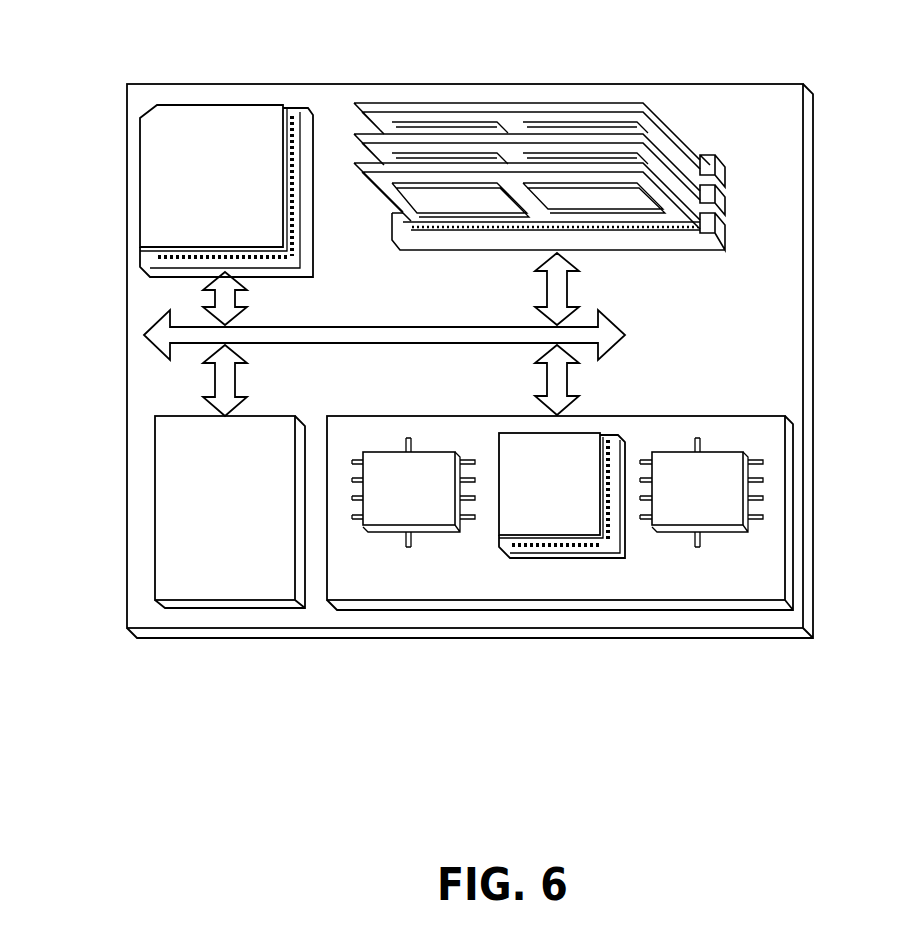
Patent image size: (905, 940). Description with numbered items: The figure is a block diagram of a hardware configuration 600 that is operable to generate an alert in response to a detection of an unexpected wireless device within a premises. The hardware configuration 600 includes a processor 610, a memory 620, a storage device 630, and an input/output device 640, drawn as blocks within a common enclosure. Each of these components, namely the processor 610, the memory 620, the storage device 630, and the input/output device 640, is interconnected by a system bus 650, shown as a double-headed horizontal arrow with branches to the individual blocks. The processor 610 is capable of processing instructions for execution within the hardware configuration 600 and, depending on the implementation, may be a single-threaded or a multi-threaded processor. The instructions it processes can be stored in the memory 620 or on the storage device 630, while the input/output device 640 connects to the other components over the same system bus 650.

The hardware configuration 600 is at (105, 750).
The processor 610 is at (272, 238).
The memory 620 is at (692, 147).
The storage device 630 is at (285, 593).
The input/output device 640 is at (748, 414).
The system bus 650 is at (383, 344).